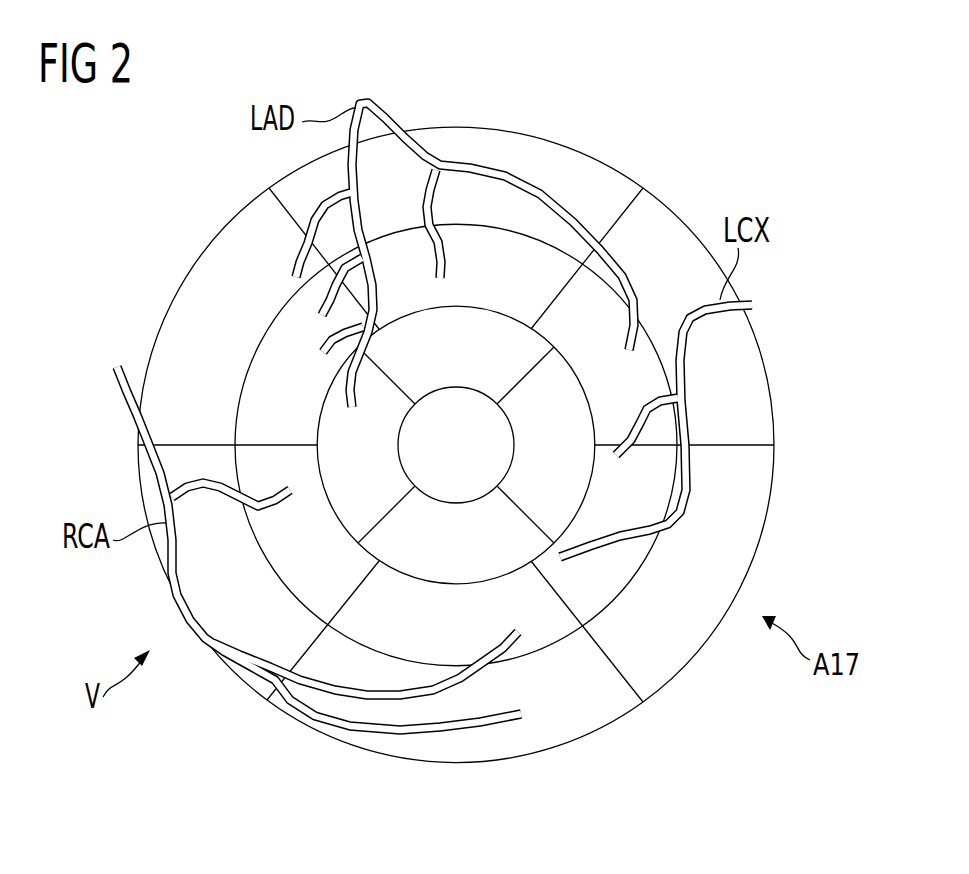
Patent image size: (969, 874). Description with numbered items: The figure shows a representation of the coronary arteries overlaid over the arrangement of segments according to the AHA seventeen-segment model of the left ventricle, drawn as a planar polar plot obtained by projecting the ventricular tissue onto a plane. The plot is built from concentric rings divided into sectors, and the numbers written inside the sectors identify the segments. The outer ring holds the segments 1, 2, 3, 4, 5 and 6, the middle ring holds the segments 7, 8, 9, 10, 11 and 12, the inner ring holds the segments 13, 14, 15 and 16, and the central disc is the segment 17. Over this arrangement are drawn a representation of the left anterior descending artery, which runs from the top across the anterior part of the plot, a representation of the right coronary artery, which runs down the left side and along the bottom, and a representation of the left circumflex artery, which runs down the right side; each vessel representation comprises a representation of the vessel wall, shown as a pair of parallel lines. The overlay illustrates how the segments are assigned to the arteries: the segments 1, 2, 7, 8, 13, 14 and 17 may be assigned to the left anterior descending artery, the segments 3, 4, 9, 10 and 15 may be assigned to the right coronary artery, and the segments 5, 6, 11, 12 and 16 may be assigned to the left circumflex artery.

The segment 1 is at (462, 213).
The segment 2 is at (204, 338).
The segment 3 is at (204, 575).
The segment 4 is at (480, 705).
The segment 5 is at (687, 575).
The segment 6 is at (711, 385).
The segment 7 is at (482, 280).
The segment 8 is at (286, 388).
The segment 9 is at (286, 542).
The segment 10 is at (442, 638).
The segment 11 is at (637, 513).
The segment 12 is at (602, 402).
The segment 13 is at (442, 365).
The segment 14 is at (345, 465).
The segment 15 is at (442, 560).
The segment 16 is at (538, 465).
The segment 17 is at (442, 465).